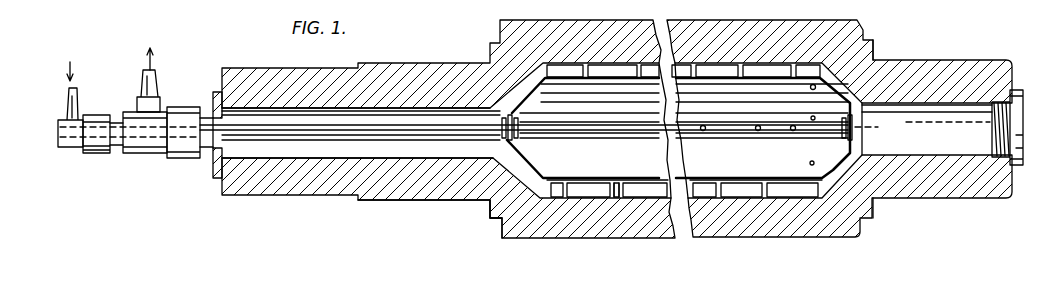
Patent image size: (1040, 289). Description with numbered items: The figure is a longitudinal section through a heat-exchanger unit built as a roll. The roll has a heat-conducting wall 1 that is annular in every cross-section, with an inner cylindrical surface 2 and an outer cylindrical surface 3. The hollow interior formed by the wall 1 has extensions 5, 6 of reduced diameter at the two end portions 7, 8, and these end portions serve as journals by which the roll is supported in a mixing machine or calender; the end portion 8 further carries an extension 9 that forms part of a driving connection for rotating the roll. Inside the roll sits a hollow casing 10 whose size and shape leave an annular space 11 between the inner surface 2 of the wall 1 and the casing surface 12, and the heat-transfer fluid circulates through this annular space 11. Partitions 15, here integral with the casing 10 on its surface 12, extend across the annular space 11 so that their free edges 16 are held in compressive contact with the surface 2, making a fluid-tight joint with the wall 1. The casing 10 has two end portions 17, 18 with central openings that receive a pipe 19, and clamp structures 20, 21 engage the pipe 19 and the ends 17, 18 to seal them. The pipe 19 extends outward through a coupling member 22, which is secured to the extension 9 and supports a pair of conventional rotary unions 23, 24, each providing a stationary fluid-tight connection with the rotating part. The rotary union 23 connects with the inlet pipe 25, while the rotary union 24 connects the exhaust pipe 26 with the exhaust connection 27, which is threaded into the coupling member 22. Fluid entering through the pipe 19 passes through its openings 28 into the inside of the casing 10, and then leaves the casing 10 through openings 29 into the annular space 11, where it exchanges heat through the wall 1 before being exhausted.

The heat-conducting wall 1 is at (845, 220).
The inner cylindrical surface 2 is at (790, 202).
The outer cylindrical surface 3 is at (793, 195).
The extension of the hollow interior 5 is at (967, 143).
The extension of the hollow interior 6 is at (343, 145).
The end portion 7 is at (950, 183).
The end portion 8 is at (392, 185).
The extension 9 is at (288, 188).
The hollow casing 10 is at (597, 188).
The annular space 11 is at (580, 190).
The casing surface 12 is at (657, 188).
The partitions 15 is at (727, 183).
The free edges of the partitions 16 is at (620, 188).
The end portion of the casing 17 is at (867, 200).
The end portion of the casing 18 is at (490, 202).
The pipe 19 is at (397, 123).
The clamp structure 20 is at (917, 122).
The clamp structure 21 is at (460, 173).
The coupling member 22 is at (210, 160).
The rotary union 23 is at (97, 147).
The rotary union 24 is at (143, 142).
The inlet pipe 25 is at (66, 103).
The exhaust pipe 26 is at (147, 83).
The exhaust connection 27 is at (207, 112).
The openings in the pipe 28 is at (705, 131).
The openings in the casing 29 is at (813, 90).